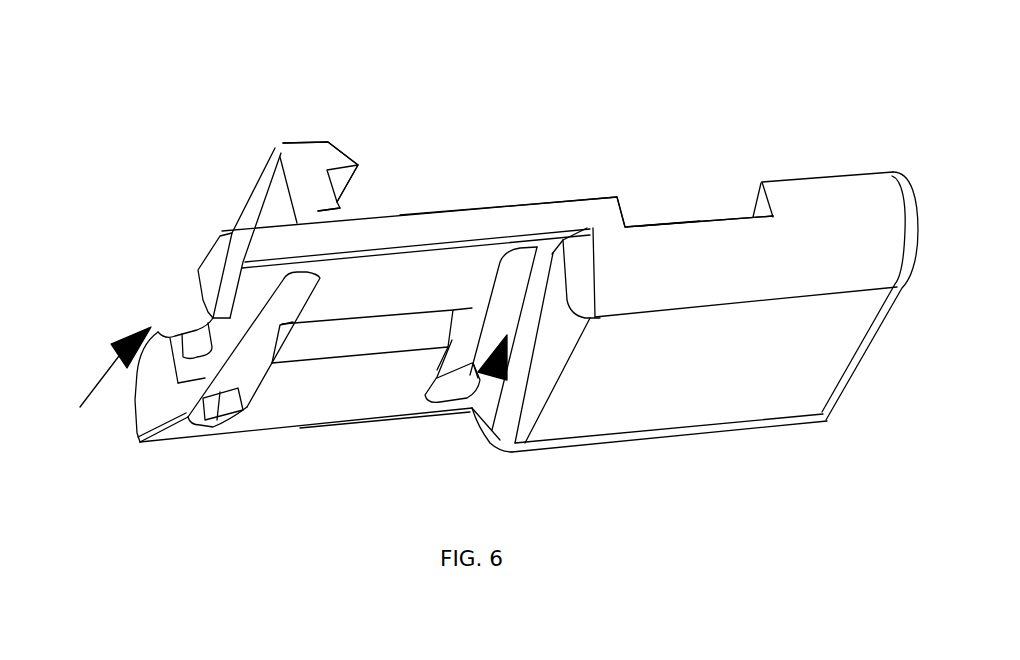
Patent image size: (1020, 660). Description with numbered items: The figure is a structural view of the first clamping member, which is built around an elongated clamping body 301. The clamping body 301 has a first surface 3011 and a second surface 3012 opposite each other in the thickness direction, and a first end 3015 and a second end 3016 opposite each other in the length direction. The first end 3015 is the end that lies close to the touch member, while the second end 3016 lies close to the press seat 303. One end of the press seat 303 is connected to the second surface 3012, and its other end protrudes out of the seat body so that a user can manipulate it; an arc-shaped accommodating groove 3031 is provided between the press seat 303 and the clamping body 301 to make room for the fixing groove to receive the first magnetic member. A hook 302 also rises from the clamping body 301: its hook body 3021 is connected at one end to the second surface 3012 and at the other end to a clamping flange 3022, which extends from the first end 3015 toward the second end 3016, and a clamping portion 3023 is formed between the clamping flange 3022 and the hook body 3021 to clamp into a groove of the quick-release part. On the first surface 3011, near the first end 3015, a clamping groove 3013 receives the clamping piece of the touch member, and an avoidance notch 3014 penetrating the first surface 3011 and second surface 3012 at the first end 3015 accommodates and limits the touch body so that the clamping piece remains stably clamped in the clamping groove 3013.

The clamping body 301 is at (297, 243).
The first surface 3011 is at (393, 397).
The second surface 3012 is at (585, 198).
The clamping groove 3013 is at (226, 378).
The avoidance notch 3014 is at (200, 318).
The first end 3015 is at (90, 386).
The second end 3016 is at (488, 367).
The hook 302 is at (480, 85).
The hook body 3021 is at (337, 208).
The clamping flange 3022 is at (333, 153).
The clamping portion 3023 is at (337, 180).
The press seat 303 is at (798, 245).
The accommodating groove 3031 is at (683, 220).